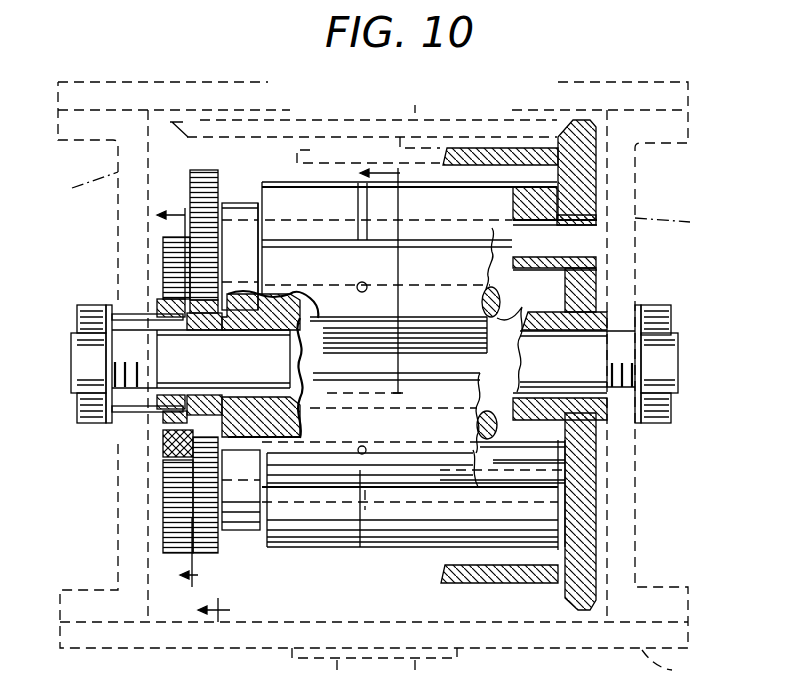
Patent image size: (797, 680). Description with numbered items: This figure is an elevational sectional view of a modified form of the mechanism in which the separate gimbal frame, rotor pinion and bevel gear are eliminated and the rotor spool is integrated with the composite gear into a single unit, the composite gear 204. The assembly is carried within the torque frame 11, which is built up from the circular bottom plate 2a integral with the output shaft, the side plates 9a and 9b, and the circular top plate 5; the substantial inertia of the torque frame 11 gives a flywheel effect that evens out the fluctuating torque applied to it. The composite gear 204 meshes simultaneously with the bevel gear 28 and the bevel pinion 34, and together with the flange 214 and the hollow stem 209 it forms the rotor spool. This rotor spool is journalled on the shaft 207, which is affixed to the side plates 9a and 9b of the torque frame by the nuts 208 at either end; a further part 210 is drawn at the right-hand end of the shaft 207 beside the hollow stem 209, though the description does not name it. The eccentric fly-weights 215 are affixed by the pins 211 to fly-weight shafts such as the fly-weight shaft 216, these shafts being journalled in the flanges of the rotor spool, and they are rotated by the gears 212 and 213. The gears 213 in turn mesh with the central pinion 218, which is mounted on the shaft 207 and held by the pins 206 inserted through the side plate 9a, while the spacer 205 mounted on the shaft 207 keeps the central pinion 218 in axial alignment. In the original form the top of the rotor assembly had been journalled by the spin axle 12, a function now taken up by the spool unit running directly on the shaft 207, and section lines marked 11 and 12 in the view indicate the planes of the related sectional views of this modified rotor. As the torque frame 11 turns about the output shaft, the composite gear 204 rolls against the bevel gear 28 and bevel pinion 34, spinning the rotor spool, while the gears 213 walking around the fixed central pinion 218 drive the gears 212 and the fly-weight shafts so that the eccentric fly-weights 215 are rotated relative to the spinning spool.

The circular top plate 5 is at (110, 82).
The bevel gear 28 is at (200, 118).
The bevel pinion 34 is at (316, 140).
The torque frame 11 is at (286, 387).
The spin axle 12 is at (176, 389).
The side plate 9a is at (76, 185).
The side plate 9b is at (676, 225).
The circular bottom plate 2a is at (671, 665).
The composite gear 204 is at (597, 178).
The spacer 205 is at (170, 448).
The pins 206 is at (118, 427).
The shaft 207 is at (242, 364).
The nuts 208 is at (78, 318).
The hollow stem 209 is at (540, 316).
The bushing 210 is at (613, 402).
The pins 211 is at (357, 205).
The gears 212 is at (197, 173).
The gears 213 is at (170, 262).
The flange 214 is at (245, 530).
The eccentric fly-weights 215 is at (476, 216).
The fly-weight shaft 216 is at (546, 250).
The central pinion 218 is at (150, 427).